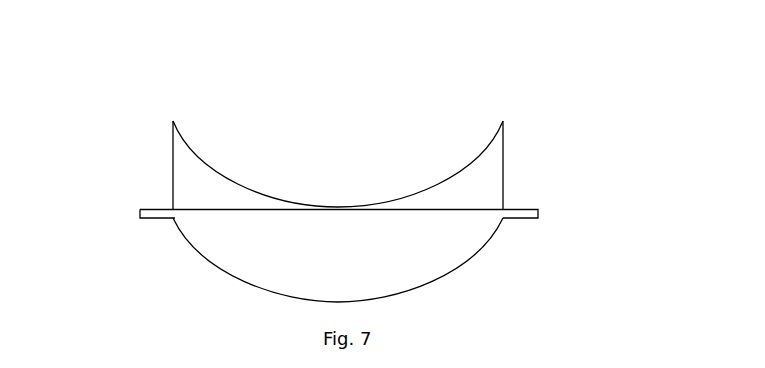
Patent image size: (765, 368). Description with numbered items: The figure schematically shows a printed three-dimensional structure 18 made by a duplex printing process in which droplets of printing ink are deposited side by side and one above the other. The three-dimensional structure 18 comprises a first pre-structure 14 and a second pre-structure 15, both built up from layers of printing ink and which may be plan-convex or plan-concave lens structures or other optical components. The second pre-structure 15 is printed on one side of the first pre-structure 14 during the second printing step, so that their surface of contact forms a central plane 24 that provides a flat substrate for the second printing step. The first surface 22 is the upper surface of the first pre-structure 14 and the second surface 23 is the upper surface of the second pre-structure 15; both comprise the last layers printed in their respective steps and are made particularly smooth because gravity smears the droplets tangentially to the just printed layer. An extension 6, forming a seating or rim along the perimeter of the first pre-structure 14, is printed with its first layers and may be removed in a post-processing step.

The printed three-dimensional structure 18 is at (340, 85).
The second pre-structure 15 is at (322, 165).
The second surface 23 is at (230, 178).
The extension 6 is at (351, 217).
The central plane 24 is at (213, 212).
The first pre-structure 14 is at (285, 260).
The first surface 22 is at (223, 269).